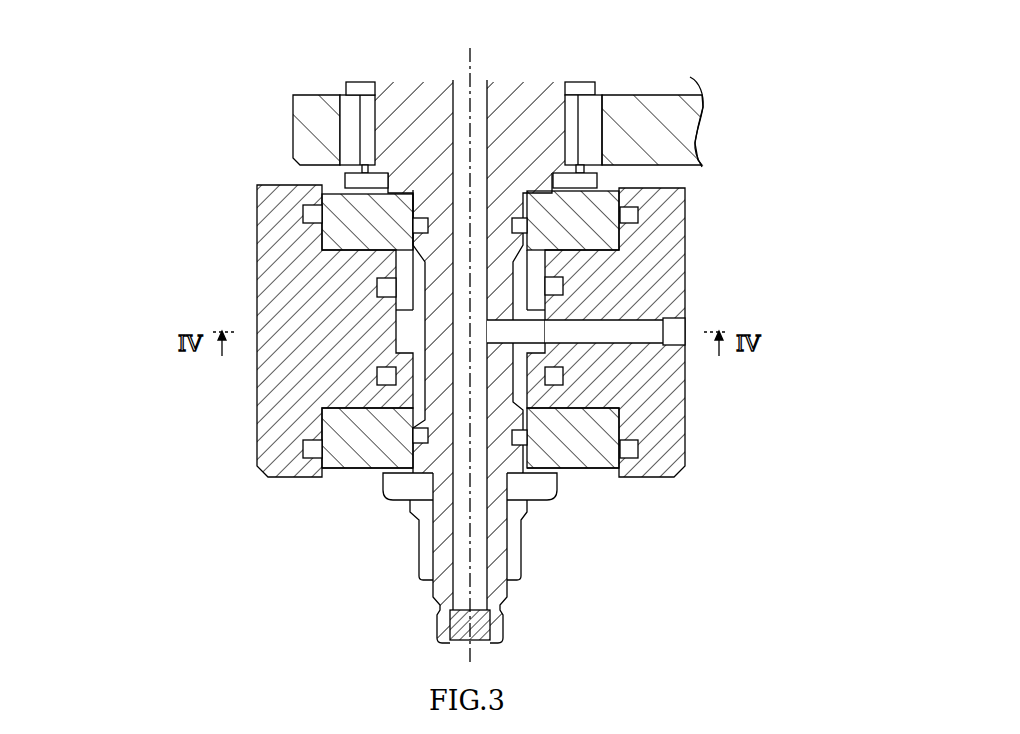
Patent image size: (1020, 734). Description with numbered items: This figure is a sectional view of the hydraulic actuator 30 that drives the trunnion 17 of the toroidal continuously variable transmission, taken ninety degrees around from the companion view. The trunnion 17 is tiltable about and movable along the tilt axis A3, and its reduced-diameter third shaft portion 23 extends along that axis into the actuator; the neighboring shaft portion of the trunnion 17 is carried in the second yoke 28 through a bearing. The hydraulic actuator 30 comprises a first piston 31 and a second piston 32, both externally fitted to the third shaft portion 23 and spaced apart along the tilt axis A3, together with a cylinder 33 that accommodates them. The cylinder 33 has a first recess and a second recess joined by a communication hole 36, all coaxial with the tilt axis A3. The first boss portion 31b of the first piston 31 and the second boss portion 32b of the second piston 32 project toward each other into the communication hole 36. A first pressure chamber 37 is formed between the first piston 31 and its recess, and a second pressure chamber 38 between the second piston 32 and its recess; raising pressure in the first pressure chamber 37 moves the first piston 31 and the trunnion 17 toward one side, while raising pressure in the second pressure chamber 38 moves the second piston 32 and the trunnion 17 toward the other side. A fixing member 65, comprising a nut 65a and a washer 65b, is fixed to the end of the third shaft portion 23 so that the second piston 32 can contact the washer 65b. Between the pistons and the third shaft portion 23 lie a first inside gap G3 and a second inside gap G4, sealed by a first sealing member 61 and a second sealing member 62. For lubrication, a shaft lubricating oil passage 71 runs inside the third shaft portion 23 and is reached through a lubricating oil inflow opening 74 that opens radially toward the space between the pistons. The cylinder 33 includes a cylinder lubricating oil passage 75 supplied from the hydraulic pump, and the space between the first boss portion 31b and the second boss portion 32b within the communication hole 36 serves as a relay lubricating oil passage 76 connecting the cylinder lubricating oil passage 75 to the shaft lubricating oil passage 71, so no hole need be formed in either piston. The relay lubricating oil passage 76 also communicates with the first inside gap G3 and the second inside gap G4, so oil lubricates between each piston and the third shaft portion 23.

The trunnion 17 is at (340, 327).
The tilt axis A3 is at (470, 58).
The shaft lubricating oil passage 71 is at (462, 138).
The second yoke 28 is at (688, 100).
The hydraulic actuator 30 is at (462, 371).
The first pressure chamber 37 is at (320, 262).
The second piston 32 is at (582, 465).
The first piston 31 is at (605, 205).
The first boss portion 31b is at (540, 268).
The second boss portion 32b is at (545, 400).
The cylinder 33 is at (632, 215).
The communication hole 36 is at (405, 325).
The second pressure chamber 38 is at (412, 437).
The first sealing member 61 is at (312, 213).
The second sealing member 62 is at (318, 465).
The lubricating oil inflow opening 74 is at (590, 343).
The cylinder lubricating oil passage 75 is at (648, 335).
The relay lubricating oil passage 76 is at (540, 322).
The first inside gap G3 is at (420, 222).
The second inside gap G4 is at (358, 470).
The third shaft portion 23 is at (443, 571).
The fixing member 65 is at (505, 585).
The nut 65a is at (527, 548).
The washer 65b is at (545, 520).